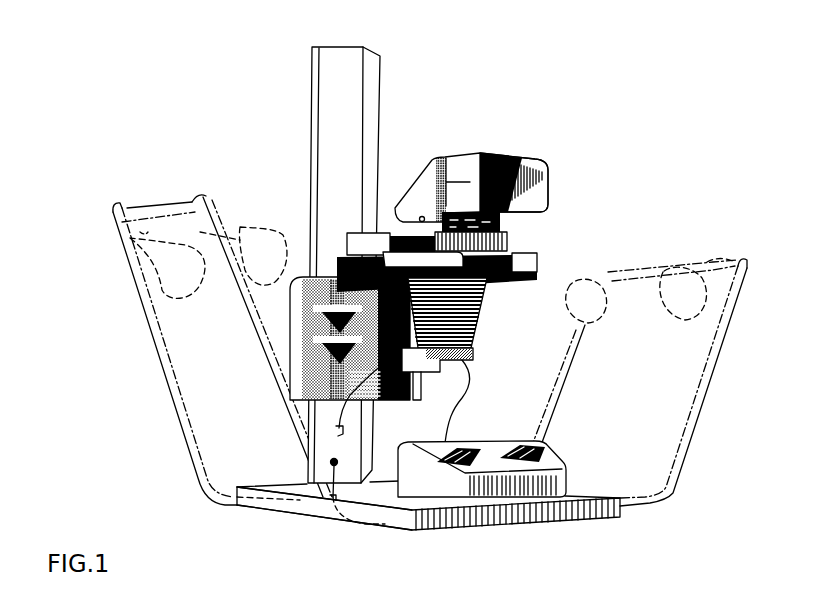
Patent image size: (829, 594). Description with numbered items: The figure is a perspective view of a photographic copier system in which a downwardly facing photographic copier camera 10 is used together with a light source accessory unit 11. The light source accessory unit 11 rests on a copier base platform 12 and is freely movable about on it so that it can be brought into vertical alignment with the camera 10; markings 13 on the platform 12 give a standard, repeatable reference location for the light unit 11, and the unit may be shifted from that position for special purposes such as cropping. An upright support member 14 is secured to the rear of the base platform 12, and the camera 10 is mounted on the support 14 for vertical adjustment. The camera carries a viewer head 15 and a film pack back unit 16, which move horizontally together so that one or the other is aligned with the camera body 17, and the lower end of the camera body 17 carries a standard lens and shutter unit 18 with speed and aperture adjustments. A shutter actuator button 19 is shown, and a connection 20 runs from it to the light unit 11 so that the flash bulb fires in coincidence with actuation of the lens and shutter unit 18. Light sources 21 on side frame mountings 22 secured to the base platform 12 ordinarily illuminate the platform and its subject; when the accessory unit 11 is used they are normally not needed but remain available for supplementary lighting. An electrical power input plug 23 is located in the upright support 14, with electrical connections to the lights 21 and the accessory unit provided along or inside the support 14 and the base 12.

The photographic copier camera 10 is at (494, 182).
The light source accessory unit 11 is at (450, 480).
The copier base platform 12 is at (577, 522).
The markings 13 is at (384, 497).
The upright support member 14 is at (312, 95).
The viewer head 15 is at (550, 175).
The film pack back unit 16 is at (373, 227).
The camera body 17 is at (480, 322).
The lens and shutter unit 18 is at (476, 352).
The shutter actuator button 19 is at (341, 423).
The connection 20 is at (447, 427).
The light sources 21 is at (173, 282).
The side frame mountings 22 is at (162, 400).
The electrical power input plug 23 is at (333, 497).